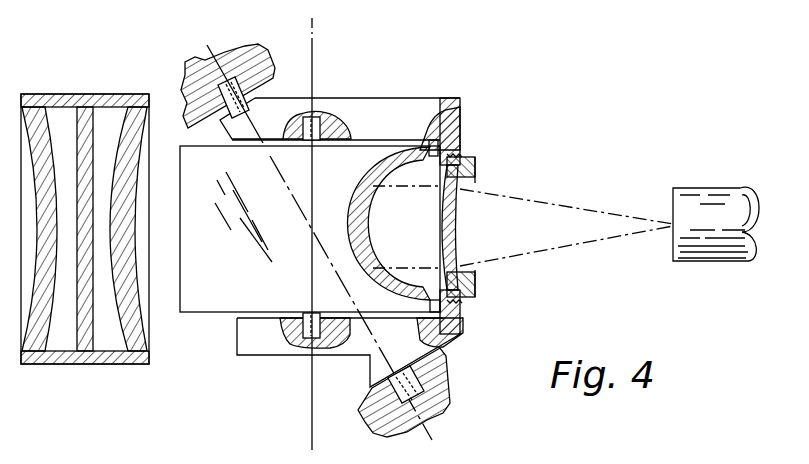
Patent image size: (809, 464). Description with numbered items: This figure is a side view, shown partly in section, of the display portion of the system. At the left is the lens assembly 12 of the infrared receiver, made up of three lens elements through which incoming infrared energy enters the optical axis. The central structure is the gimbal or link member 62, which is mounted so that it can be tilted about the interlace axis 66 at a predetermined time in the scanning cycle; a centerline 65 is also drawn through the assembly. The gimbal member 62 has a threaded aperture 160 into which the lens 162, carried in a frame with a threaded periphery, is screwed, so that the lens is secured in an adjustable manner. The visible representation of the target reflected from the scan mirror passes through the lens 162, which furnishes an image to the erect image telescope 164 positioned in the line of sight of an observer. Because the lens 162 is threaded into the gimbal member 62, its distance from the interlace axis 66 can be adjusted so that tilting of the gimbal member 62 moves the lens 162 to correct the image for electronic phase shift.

The lens assembly 12 is at (107, 366).
The gimbal or link member 62 is at (377, 105).
The centerline 65 is at (313, 68).
The interlace axis 66 is at (205, 52).
The threaded aperture 160 is at (467, 302).
The lens 162 is at (440, 230).
The erect image telescope 164 is at (707, 192).